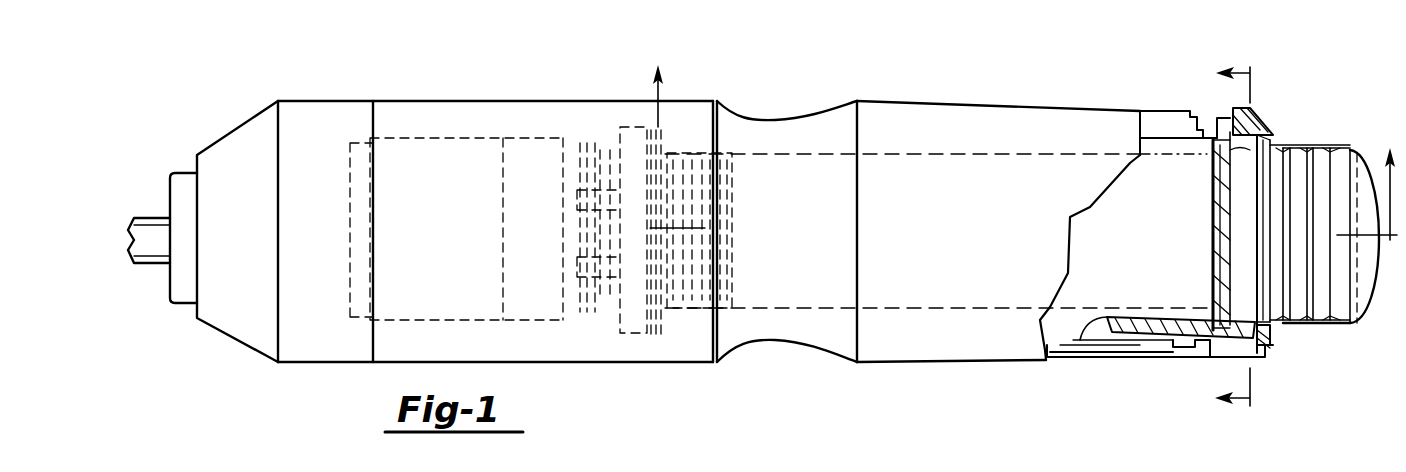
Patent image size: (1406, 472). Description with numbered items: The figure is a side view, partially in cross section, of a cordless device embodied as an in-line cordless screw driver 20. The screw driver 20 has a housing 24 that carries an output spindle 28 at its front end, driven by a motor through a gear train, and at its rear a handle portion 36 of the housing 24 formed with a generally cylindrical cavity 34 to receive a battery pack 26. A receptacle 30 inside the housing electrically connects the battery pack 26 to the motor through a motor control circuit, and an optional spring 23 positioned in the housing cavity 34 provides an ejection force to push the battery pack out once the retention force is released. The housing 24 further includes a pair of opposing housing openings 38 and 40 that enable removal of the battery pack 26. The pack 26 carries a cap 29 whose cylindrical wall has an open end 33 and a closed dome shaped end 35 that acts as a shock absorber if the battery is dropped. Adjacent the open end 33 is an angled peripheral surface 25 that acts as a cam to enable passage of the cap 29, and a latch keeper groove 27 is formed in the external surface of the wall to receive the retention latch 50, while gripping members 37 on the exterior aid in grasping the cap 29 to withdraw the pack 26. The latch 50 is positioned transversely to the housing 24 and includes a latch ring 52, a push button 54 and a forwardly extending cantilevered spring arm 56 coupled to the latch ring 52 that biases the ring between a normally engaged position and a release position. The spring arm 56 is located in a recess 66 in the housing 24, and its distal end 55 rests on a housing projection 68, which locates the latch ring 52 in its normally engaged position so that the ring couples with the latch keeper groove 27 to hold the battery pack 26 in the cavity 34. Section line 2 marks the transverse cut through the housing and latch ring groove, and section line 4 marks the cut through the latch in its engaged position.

The cordless screw driver 20 is at (903, 372).
The housing 24 is at (1013, 104).
The output spindle 28 is at (188, 166).
The handle portion 36 is at (940, 223).
The receptacle 30 is at (651, 209).
The spring 23 is at (693, 300).
The cylindrical cavity 34 is at (1160, 143).
The battery pack 26 is at (1083, 305).
The angled peripheral surface 25 is at (1220, 220).
The open end 33 is at (1212, 253).
The latch keeper groove 27 is at (1232, 151).
The gripping members 37 is at (1307, 148).
The push button 54 is at (1252, 108).
The latch ring 52 is at (1270, 137).
The retention latch 50 is at (1278, 114).
The housing opening 38 is at (1297, 140).
The housing opening 40 is at (1300, 327).
The dome shaped end 35 is at (1379, 262).
The cap 29 is at (1353, 333).
The cantilevered spring arm 56 is at (1172, 352).
The housing projection 68 is at (1127, 335).
The distal end 55 is at (1088, 330).
The recess 66 is at (1260, 350).
The section line 2- 2 is at (1015, 142).
The section line 4- 4 is at (1255, 236).